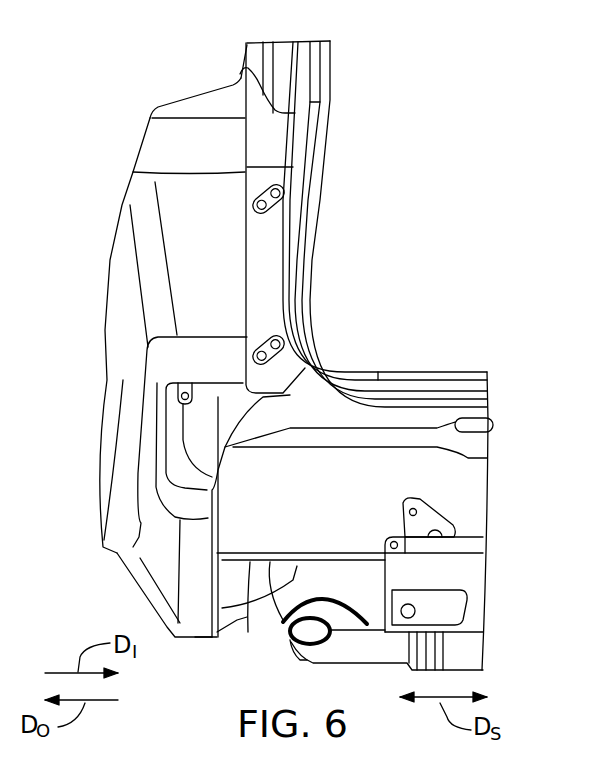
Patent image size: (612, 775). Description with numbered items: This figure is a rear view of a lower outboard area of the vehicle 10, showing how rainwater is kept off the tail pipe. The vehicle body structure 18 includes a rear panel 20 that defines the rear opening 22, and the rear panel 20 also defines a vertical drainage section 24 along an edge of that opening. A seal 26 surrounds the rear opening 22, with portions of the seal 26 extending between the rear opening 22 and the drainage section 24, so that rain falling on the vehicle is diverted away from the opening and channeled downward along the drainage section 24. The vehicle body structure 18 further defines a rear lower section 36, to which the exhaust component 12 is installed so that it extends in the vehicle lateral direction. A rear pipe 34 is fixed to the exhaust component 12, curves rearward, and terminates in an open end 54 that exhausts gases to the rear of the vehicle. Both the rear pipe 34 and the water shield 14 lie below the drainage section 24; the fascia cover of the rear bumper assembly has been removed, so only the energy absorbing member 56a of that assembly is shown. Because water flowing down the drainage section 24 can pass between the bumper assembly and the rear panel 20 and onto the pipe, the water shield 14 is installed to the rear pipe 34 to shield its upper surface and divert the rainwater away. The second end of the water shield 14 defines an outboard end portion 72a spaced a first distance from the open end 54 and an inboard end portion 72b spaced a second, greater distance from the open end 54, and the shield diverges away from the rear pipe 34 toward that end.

The vehicle 10 is at (128, 88).
The vehicle body structure 18 is at (195, 98).
The rear panel 20 is at (200, 237).
The vertical drainage section 24 is at (263, 248).
The seal 26 is at (300, 298).
The rear opening 22 is at (315, 345).
The water shield 14 is at (327, 600).
The outboard end portion 72a is at (272, 582).
The inboard end portion 72b is at (367, 622).
The rear lower section 36 is at (227, 636).
The open end 54 is at (310, 645).
The rear pipe 34 is at (357, 647).
The energy absorbing member 56a is at (447, 572).
The exhaust component 12 is at (460, 652).